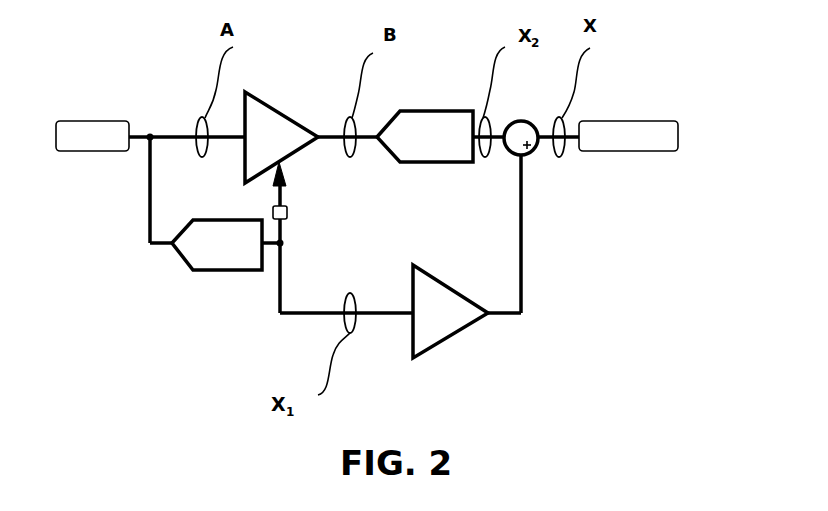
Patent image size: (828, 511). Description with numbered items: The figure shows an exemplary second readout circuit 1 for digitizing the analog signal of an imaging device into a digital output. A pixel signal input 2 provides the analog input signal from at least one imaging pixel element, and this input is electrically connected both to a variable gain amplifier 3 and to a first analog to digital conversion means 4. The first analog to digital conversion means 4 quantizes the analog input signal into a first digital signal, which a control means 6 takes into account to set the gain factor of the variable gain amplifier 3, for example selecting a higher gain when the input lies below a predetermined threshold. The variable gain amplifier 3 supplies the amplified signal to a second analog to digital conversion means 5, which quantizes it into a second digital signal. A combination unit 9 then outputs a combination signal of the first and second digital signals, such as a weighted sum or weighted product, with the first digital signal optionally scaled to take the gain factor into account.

The readout circuit 1 is at (605, 323).
The pixel signal input 2 is at (90, 151).
The variable gain amplifier 3 is at (270, 100).
The first analog to digital conversion means 4 is at (182, 260).
The second analog to digital conversion means 5 is at (440, 163).
The control means 6 is at (287, 220).
The combination unit 9 is at (447, 280).